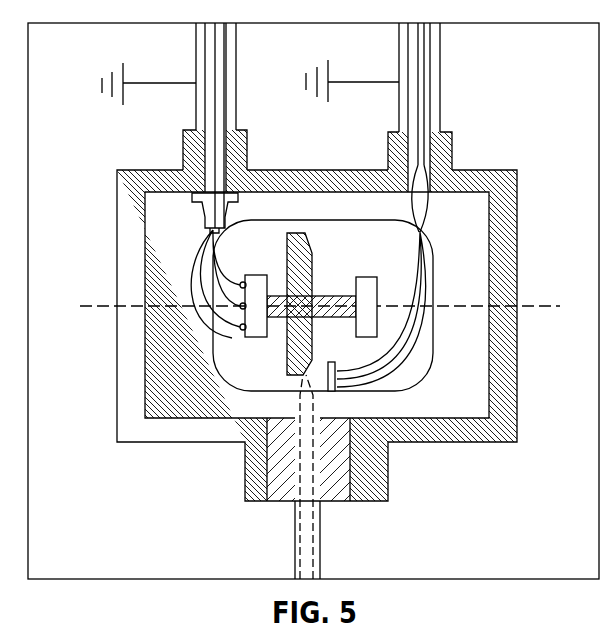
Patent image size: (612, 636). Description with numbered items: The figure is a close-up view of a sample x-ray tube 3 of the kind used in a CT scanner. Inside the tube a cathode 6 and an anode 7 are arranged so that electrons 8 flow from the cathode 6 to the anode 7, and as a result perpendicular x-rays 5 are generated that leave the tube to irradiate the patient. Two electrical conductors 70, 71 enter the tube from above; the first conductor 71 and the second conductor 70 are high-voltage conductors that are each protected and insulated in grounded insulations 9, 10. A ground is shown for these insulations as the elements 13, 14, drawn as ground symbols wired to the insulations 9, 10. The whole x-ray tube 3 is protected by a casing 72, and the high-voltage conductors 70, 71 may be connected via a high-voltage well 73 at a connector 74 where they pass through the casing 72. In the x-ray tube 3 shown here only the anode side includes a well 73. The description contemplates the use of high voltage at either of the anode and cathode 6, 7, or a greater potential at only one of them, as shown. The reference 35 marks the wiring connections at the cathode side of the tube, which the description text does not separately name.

The x-ray tube 3 is at (518, 208).
The x-rays 5 is at (307, 553).
The cathode 6 is at (329, 362).
The anode 7 is at (312, 262).
The electrons 8 is at (306, 413).
The grounded insulation 9 is at (238, 100).
The grounded insulation 10 is at (440, 97).
The ground 13 is at (124, 93).
The ground 14 is at (329, 92).
The wire connections 35 is at (238, 336).
The second conductor 70 is at (218, 60).
The first conductor 71 is at (420, 60).
The casing 72 is at (487, 170).
The high-voltage well 73 is at (203, 212).
The connector 74 is at (233, 158).